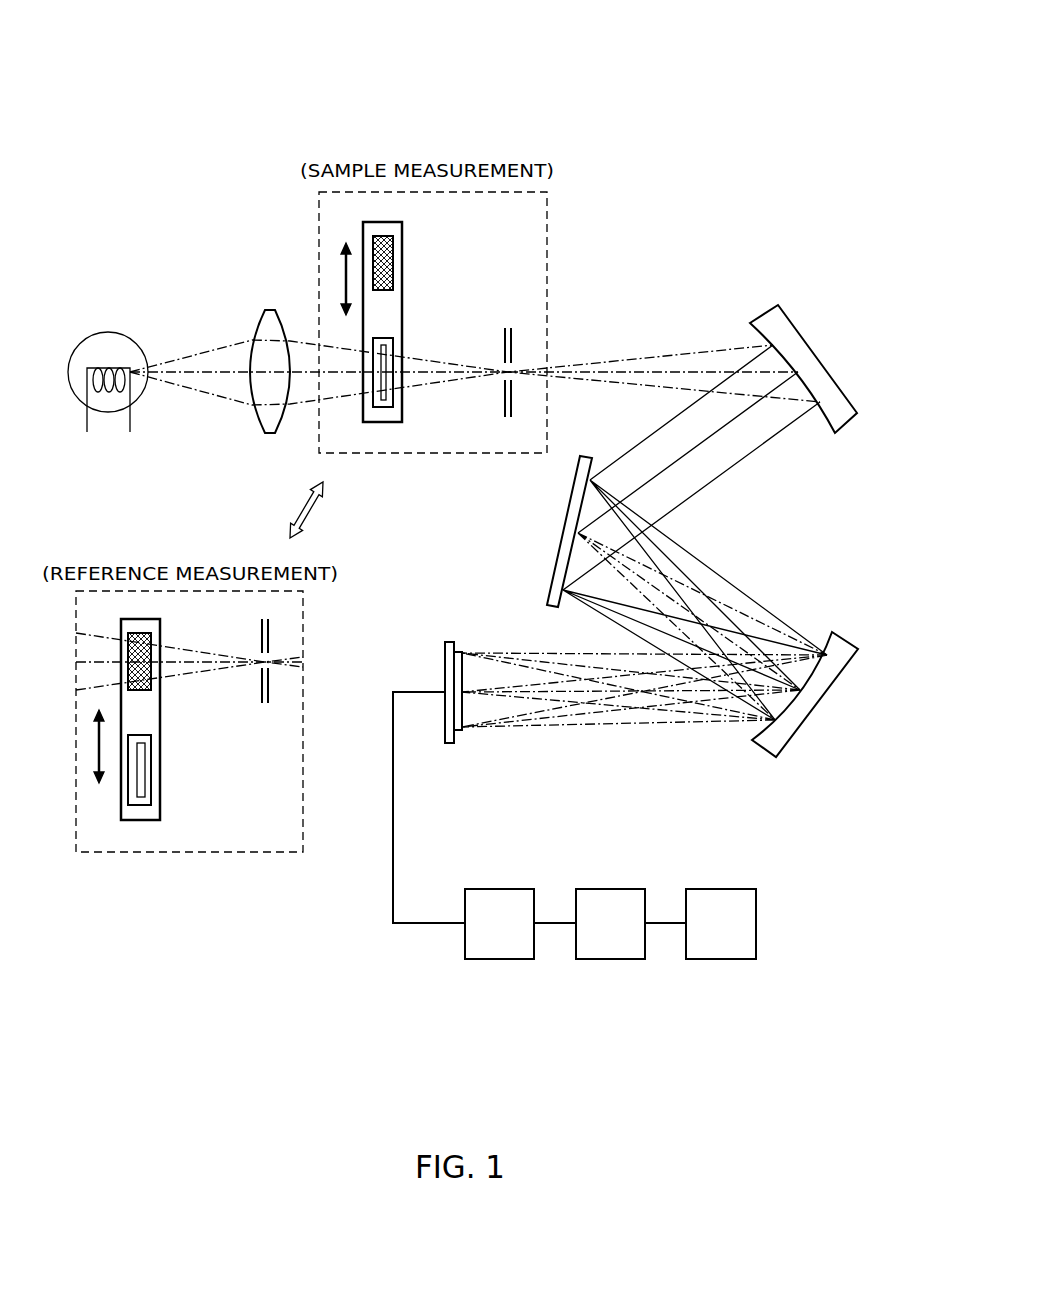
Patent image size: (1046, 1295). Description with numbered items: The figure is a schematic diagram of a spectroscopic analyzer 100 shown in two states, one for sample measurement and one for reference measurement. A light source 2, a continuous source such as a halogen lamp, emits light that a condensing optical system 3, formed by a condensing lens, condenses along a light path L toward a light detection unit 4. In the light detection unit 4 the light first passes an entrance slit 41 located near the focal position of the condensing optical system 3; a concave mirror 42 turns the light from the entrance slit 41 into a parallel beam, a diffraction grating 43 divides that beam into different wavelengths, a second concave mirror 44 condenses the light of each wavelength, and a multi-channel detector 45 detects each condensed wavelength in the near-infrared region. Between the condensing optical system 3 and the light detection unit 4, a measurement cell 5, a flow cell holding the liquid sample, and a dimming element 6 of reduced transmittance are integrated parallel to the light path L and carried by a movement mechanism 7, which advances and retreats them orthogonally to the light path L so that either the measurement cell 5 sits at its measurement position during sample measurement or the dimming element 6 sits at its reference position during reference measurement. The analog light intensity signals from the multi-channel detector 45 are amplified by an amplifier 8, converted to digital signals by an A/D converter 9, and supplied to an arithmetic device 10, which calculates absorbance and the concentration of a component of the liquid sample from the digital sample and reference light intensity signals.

The spectroscopic analyzer 100 is at (197, 130).
The light source 2 is at (108, 332).
The condensing optical system 3 is at (270, 308).
The light detection unit 4 is at (677, 305).
The entrance slit 41 is at (517, 360).
The concave mirror 42 is at (778, 304).
The diffraction grating 43 is at (568, 529).
The concave mirror 44 is at (762, 753).
The multi-channel detector 45 is at (450, 747).
The measurement cell 5 is at (394, 348).
The dimming element 6 is at (394, 262).
The movement mechanism 7 is at (388, 424).
The amplifier 8 is at (498, 962).
The A/D converter 9 is at (610, 962).
The arithmetic device 10 is at (722, 962).
The light path L is at (449, 376).